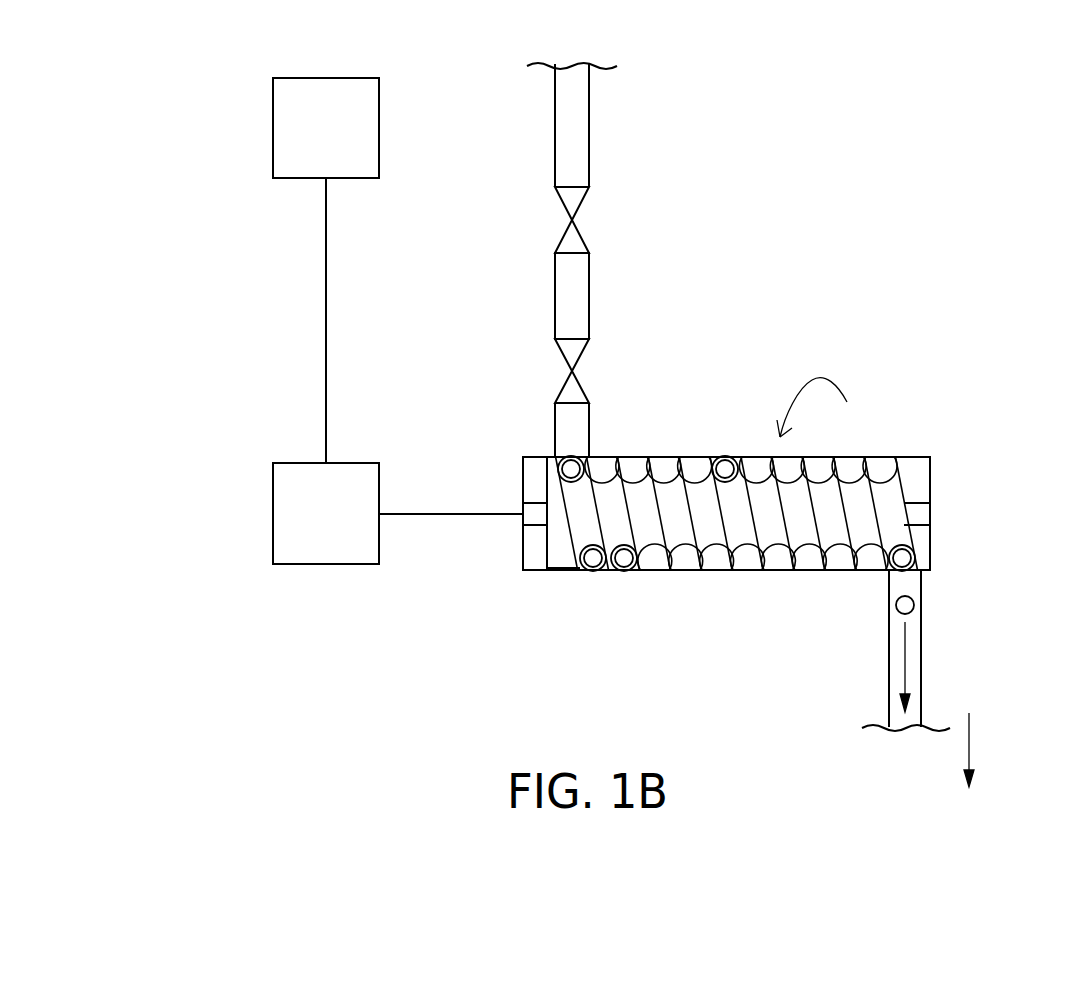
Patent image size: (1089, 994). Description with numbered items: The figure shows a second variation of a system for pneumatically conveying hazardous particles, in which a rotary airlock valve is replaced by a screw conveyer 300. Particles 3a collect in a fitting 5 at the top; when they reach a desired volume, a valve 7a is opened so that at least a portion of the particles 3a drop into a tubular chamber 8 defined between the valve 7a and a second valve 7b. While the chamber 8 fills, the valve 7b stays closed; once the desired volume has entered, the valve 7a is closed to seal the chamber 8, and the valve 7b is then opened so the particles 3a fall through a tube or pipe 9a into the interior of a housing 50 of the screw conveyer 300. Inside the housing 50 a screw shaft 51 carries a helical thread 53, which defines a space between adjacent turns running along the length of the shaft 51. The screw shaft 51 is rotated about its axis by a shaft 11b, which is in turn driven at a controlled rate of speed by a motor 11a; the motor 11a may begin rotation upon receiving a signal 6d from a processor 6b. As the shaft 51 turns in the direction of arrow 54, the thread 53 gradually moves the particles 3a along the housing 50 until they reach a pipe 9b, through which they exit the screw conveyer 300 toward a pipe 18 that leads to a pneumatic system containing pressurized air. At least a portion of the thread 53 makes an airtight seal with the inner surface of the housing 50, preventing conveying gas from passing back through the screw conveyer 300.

The fitting 5 is at (555, 115).
The valve 7a is at (560, 203).
The tubular chamber 8 is at (555, 283).
The valve 7b is at (562, 358).
The pipe 9a is at (555, 422).
The pipe 9b is at (889, 622).
The particles 3a is at (573, 465).
The housing 50 is at (917, 455).
The screw shaft 51 is at (655, 545).
The helical thread 53 is at (734, 545).
The arrow 54 is at (822, 375).
The screw conveyer 300 is at (872, 424).
The processor 6b is at (348, 143).
The signal 6d is at (326, 325).
The motor 11a is at (273, 508).
The shaft 11b is at (453, 518).
The pipe 18 is at (1004, 750).